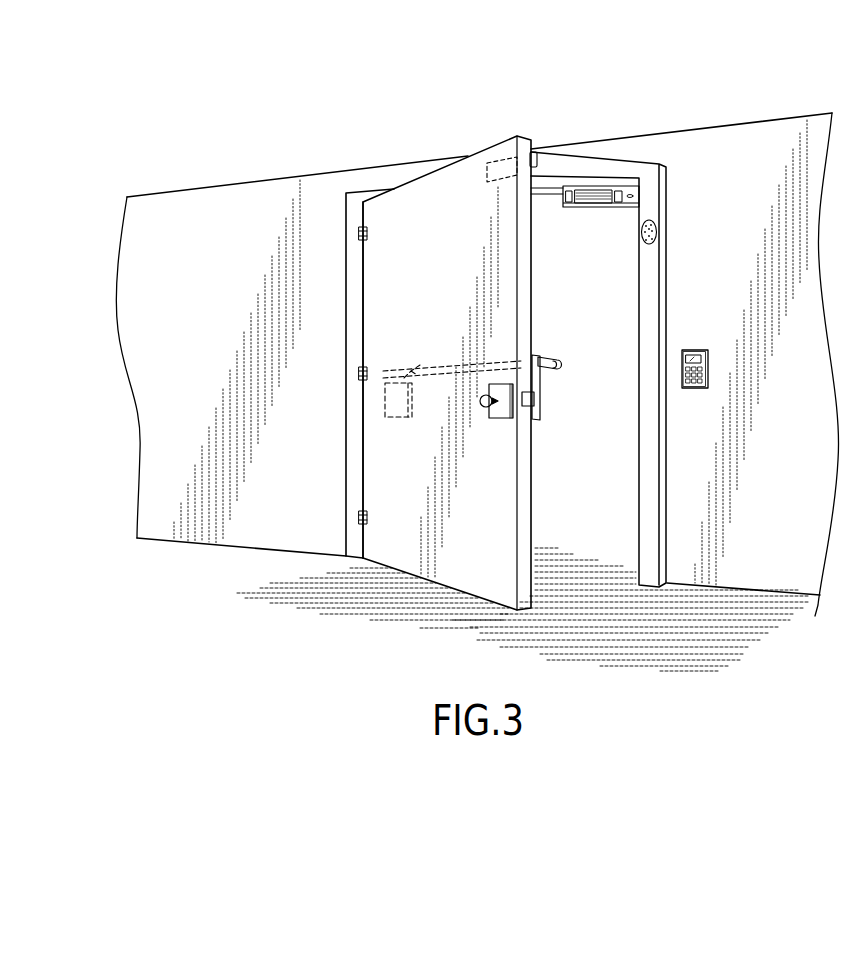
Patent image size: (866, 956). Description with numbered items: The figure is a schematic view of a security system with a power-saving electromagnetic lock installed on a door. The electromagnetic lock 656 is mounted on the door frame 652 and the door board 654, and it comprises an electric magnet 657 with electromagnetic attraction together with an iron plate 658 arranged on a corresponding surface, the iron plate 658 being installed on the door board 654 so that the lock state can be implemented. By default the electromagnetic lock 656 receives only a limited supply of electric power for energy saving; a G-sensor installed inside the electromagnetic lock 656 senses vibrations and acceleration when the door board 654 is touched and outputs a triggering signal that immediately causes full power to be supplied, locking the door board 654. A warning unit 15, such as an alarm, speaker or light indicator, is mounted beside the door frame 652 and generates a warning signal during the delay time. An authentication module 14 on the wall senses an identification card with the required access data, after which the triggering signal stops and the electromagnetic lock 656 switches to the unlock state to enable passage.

The door frame 652 is at (650, 185).
The door board 654 is at (393, 208).
The electromagnetic lock 656 is at (563, 110).
The electric magnet 657 is at (599, 197).
The iron plate 658 is at (512, 122).
The warning unit 15 is at (656, 223).
The authentication module 14 is at (697, 350).